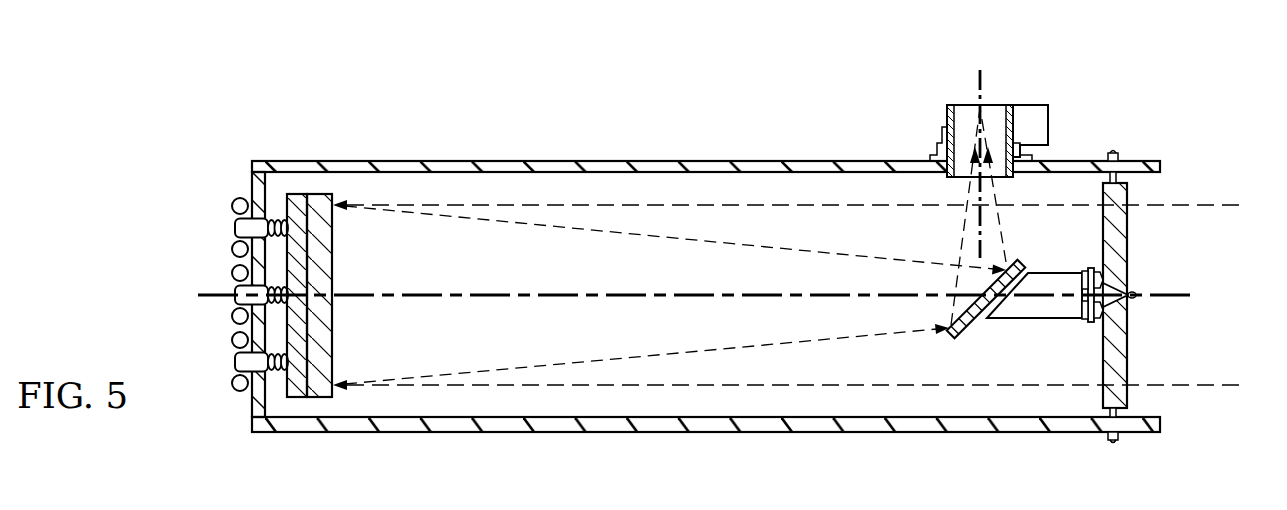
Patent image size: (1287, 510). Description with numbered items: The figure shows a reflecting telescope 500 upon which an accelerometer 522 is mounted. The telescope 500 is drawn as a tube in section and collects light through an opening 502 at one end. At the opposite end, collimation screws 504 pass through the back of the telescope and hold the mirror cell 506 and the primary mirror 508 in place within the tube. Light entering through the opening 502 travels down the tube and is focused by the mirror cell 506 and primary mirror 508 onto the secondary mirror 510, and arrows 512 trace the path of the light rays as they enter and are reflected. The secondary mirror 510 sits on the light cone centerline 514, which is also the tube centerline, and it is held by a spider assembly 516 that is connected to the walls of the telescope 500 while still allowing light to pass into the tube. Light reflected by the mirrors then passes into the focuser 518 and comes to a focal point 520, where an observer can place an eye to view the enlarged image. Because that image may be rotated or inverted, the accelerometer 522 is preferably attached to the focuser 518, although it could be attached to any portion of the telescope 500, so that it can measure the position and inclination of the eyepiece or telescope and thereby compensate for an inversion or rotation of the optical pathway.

The telescope 500 is at (538, 84).
The opening 502 is at (1127, 330).
The collimation screws 504 is at (234, 226).
The mirror cell 506 is at (304, 193).
The primary mirror 508 is at (333, 340).
The secondary mirror 510 is at (975, 322).
The arrows 512 is at (587, 231).
The light cone centerline 514 is at (514, 293).
The spider assembly 516 is at (1141, 245).
The focuser 518 is at (940, 145).
The focal point 520 is at (1003, 68).
The accelerometer 522 is at (1050, 130).